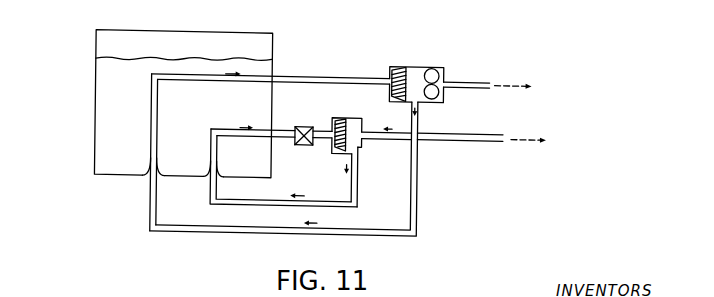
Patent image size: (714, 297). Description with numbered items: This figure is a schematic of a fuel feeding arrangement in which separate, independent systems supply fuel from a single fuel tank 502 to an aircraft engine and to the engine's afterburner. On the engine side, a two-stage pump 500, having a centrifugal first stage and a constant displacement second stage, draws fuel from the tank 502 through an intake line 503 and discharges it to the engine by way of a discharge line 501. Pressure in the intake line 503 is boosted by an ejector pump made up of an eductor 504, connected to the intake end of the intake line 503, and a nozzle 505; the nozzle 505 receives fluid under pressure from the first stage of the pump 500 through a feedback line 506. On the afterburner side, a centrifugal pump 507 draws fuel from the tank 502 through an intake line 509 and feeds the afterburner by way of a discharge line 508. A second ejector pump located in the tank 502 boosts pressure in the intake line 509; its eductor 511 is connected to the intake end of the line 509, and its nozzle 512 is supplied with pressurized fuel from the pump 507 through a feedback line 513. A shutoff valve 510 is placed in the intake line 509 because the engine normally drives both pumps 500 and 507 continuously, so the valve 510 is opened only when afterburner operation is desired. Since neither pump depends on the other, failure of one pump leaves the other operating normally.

The two-stage pump 500 is at (420, 61).
The discharge line 501 is at (480, 78).
The fuel tank 502 is at (106, 128).
The intake line 503 is at (304, 75).
The eductor 504 is at (147, 172).
The nozzle 505 is at (146, 178).
The feedback line 506 is at (418, 174).
The centrifugal pump 507 is at (350, 116).
The discharge line 508 is at (460, 129).
The intake line 509 is at (280, 128).
The shutoff valve 510 is at (305, 144).
The eductor 511 is at (221, 158).
The nozzle 512 is at (208, 180).
The feedback line 513 is at (359, 173).